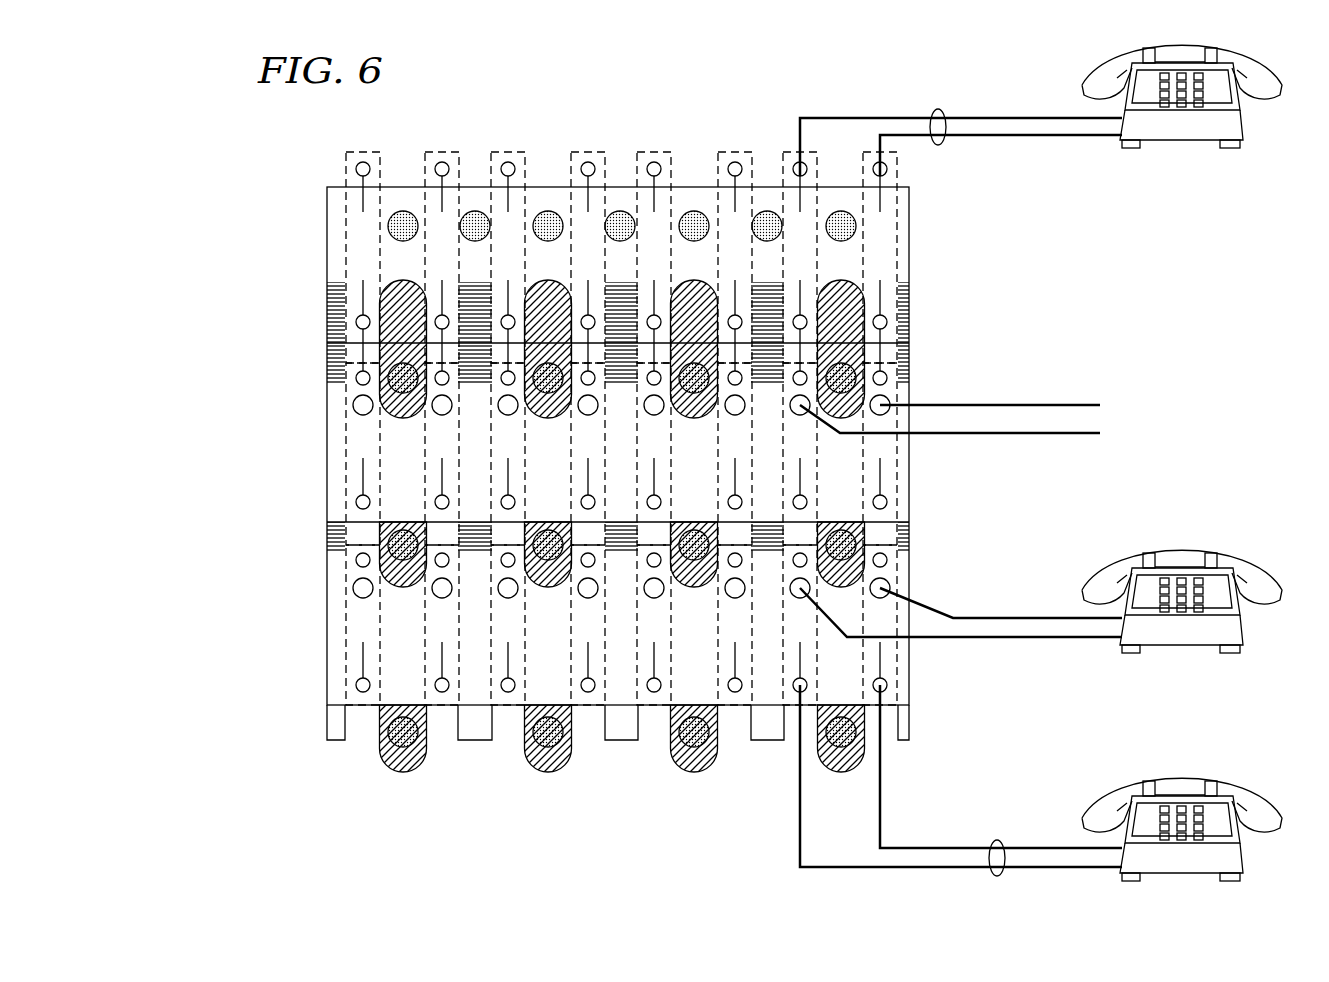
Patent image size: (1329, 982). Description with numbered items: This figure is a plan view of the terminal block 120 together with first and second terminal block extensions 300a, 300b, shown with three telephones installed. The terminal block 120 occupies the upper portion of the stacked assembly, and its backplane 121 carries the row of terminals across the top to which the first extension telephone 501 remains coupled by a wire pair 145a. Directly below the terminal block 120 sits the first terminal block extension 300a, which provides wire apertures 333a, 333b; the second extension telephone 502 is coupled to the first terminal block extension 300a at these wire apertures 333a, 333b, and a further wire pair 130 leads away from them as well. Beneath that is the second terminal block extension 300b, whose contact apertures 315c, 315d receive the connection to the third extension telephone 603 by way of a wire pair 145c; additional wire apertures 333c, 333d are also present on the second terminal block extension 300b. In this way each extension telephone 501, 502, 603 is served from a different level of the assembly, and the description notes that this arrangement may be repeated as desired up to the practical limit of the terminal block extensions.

The terminal block 120 is at (292, 270).
The backplane 121 is at (923, 148).
The output wire pair 130 is at (1106, 388).
The telephone line pair 145a is at (938, 108).
The telephone line pair 145c is at (997, 840).
The first terminal block extension 300a is at (292, 442).
The second terminal block extension 300b is at (292, 607).
The wire aperture 333a is at (888, 396).
The wire aperture 333b is at (805, 395).
The output terminal 333c is at (891, 586).
The output terminal 333d is at (815, 575).
The contact aperture 315c is at (888, 686).
The contact aperture 315d is at (795, 692).
The first extension telephone 501 is at (1183, 148).
The second extension telephone 502 is at (1180, 540).
The third extension telephone 603 is at (1180, 770).